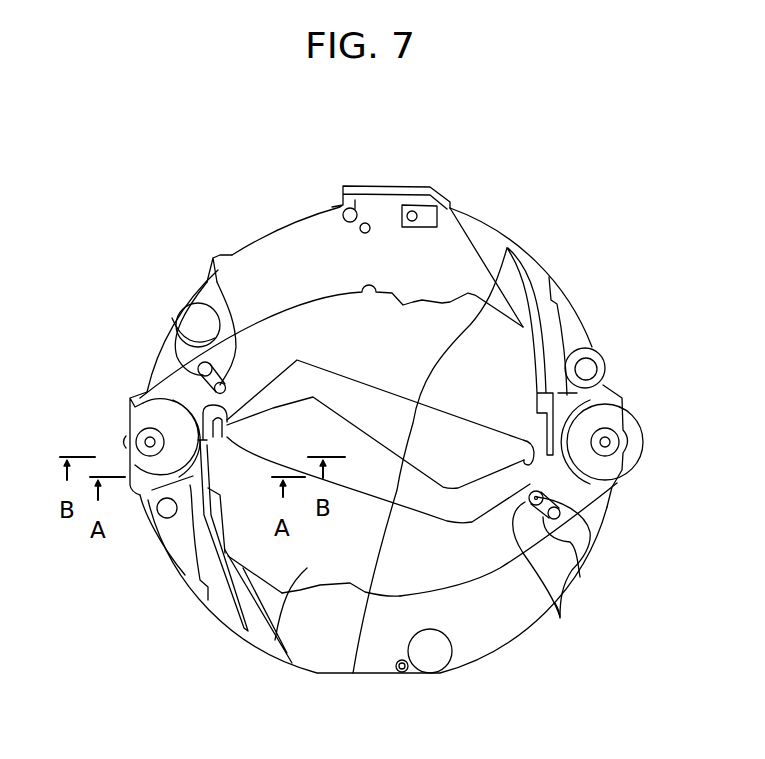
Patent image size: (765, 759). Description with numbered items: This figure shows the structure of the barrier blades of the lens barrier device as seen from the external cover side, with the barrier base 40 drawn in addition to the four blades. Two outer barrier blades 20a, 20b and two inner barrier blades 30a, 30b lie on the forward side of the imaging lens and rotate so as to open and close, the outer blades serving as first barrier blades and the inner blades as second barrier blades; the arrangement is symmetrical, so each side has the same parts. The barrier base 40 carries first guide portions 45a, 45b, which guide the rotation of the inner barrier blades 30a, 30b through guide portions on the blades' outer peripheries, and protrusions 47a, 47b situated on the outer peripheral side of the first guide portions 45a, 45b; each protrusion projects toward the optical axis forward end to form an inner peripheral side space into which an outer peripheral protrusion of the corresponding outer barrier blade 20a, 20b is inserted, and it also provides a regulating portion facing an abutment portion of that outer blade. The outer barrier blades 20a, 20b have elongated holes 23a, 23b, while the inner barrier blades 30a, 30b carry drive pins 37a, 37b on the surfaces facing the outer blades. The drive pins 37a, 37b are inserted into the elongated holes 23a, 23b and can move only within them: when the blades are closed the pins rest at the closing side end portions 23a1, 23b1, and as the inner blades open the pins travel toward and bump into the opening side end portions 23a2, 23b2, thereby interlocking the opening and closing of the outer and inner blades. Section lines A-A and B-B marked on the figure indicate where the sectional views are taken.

The outer barrier blade 20a is at (272, 647).
The outer barrier blade 20b is at (377, 318).
The elongated hole 23a is at (580, 578).
The closing side end portion 23a1 is at (558, 604).
The opening side end portion 23a2 is at (588, 548).
The elongated hole 23b is at (175, 368).
The closing side end portion 23b1 is at (210, 278).
The opening side end portion 23b2 is at (198, 364).
The inner barrier blade 30a is at (352, 673).
The inner barrier blade 30b is at (500, 307).
The drive pin 37a is at (597, 519).
The drive pin 37b is at (188, 318).
The barrier base 40 is at (590, 348).
The first guide portion 45a is at (243, 588).
The first guide portion 45b is at (512, 302).
The protrusion 47a is at (150, 527).
The protrusion 47b is at (610, 389).